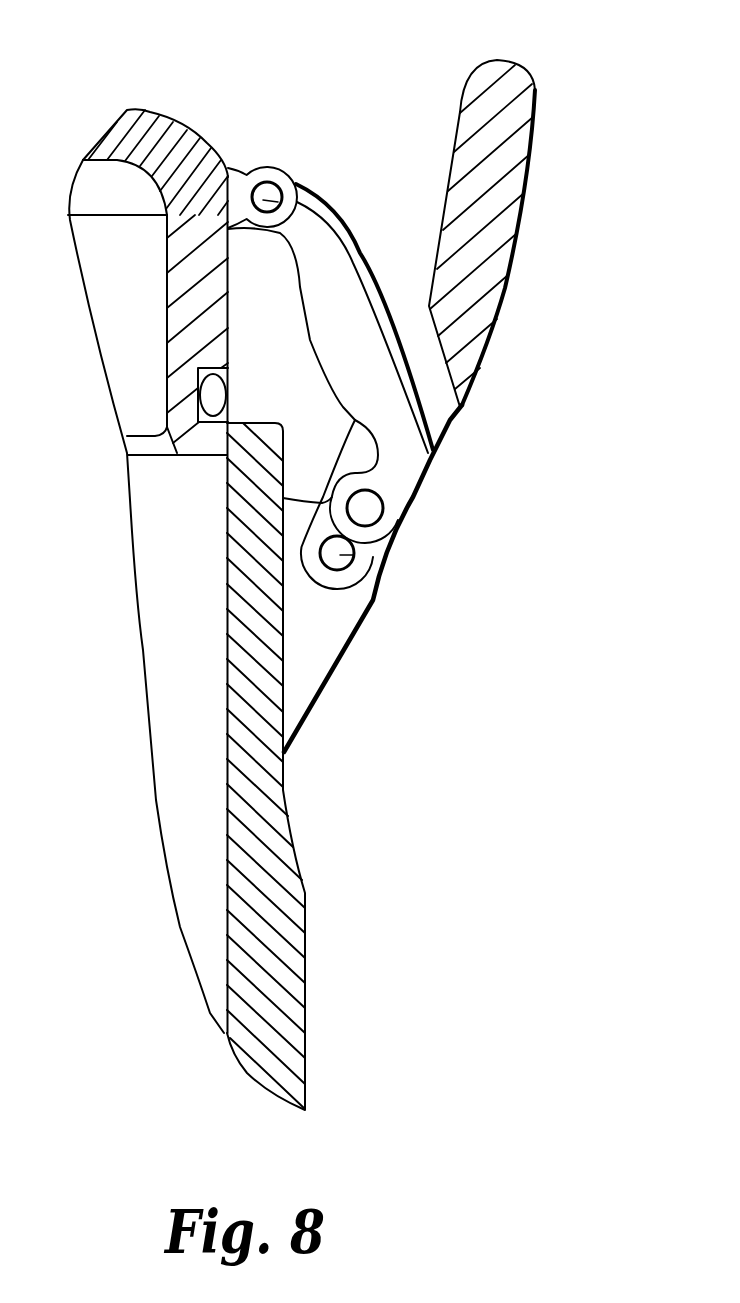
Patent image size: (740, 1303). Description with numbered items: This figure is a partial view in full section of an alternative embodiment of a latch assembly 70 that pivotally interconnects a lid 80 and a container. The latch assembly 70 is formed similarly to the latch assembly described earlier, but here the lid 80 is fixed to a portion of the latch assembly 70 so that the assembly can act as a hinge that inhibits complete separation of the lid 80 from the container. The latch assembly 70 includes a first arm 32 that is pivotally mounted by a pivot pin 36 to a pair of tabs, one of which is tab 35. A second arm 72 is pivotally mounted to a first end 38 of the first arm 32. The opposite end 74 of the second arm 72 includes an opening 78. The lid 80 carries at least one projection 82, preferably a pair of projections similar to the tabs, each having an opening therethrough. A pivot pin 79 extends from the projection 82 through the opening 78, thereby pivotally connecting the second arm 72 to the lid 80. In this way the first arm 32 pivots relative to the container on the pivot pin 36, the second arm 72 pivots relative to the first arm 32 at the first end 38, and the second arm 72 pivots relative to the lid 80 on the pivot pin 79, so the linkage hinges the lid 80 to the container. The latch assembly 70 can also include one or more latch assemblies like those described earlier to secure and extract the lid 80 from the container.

The lid 80 is at (157, 111).
The projection 82 is at (227, 200).
The opening 78 is at (263, 186).
The opposite end 74 is at (281, 172).
The pivot pin 79 is at (300, 193).
The second arm 72 is at (345, 317).
The first arm 32 is at (492, 180).
The first end 38 is at (370, 553).
The pivot pin 36 is at (372, 560).
The tab 35 is at (303, 670).
The latch assembly 70 is at (457, 565).